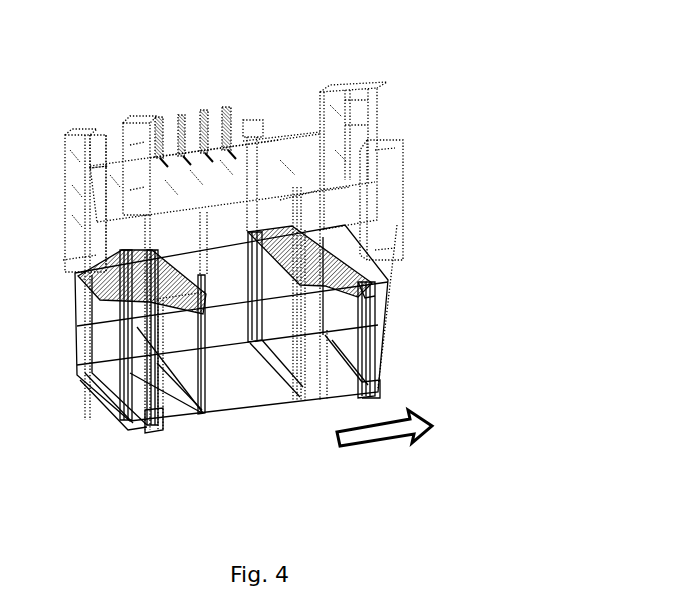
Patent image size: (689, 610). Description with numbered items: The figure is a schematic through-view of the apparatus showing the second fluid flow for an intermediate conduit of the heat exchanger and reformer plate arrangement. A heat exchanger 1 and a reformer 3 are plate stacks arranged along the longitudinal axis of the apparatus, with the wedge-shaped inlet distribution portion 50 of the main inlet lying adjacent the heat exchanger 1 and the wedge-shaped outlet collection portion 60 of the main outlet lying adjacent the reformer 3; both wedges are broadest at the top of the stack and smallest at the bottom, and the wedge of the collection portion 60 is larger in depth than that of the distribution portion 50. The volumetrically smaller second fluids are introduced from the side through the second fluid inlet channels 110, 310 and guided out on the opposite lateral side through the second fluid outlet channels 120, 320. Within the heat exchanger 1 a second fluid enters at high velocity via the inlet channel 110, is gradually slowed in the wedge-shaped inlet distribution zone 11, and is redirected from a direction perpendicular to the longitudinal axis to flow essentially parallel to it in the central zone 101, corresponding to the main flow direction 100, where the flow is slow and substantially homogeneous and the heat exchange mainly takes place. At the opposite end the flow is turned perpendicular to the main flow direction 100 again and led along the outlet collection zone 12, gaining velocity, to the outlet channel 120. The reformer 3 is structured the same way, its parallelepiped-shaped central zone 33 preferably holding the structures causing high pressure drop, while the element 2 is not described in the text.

The heat exchanger 1 is at (182, 413).
The second receiving compartment 2 is at (226, 297).
The reformer 3 is at (330, 385).
The inlet distribution zone 11 is at (112, 297).
The outlet collection zone 12 is at (157, 262).
The central zone 33 is at (313, 268).
The inlet distribution portion 50 is at (93, 197).
The outlet collection portion 60 is at (380, 130).
The main flow direction 100 is at (381, 443).
The central zone 101 is at (125, 360).
The second fluid inlet channel 110 is at (153, 410).
The second fluid outlet channel 120 is at (140, 178).
The second fluid inlet channel 310 is at (253, 132).
The second fluid outlet channel 320 is at (367, 213).